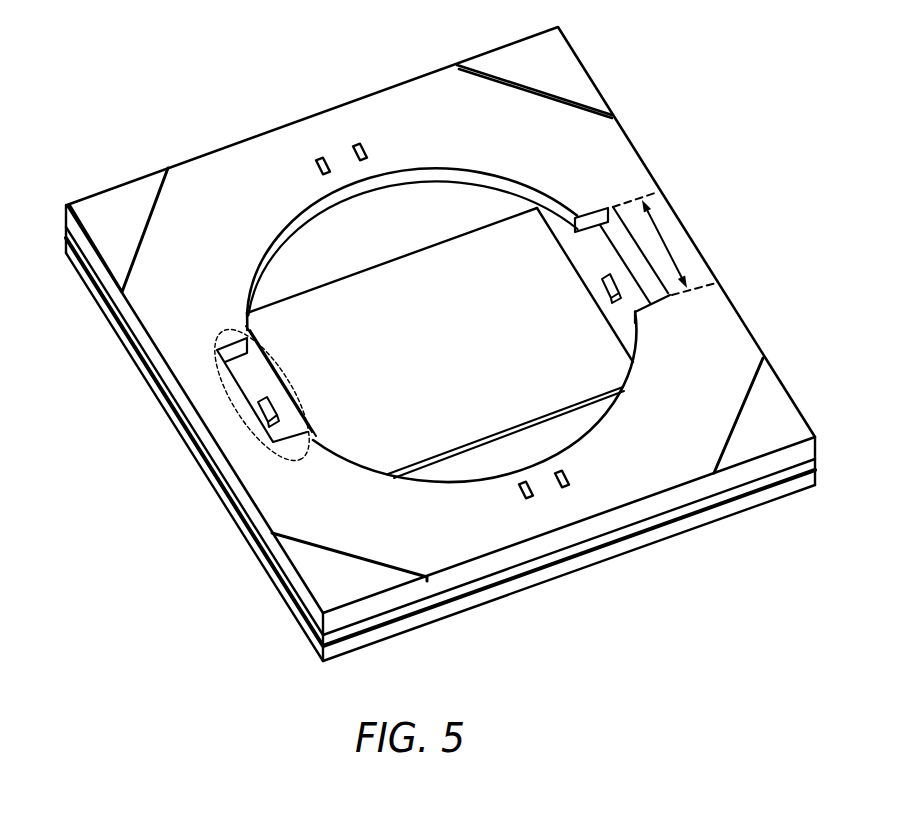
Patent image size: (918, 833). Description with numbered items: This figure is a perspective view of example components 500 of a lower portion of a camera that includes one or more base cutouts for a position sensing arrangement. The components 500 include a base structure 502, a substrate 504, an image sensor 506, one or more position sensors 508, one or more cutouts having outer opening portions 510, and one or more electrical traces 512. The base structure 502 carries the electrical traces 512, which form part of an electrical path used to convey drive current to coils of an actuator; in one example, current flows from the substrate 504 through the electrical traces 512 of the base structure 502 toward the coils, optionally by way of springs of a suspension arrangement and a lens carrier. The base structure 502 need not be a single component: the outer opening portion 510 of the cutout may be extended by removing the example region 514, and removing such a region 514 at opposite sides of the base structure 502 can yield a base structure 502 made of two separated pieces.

The components 500 is at (138, 102).
The base structure 502 is at (225, 221).
The substrate 504 is at (390, 244).
The image sensor 506 is at (438, 344).
The position sensor 508 is at (600, 282).
The outer opening portion 510 is at (272, 343).
The electrical trace 512 is at (365, 145).
The region 514 is at (661, 233).